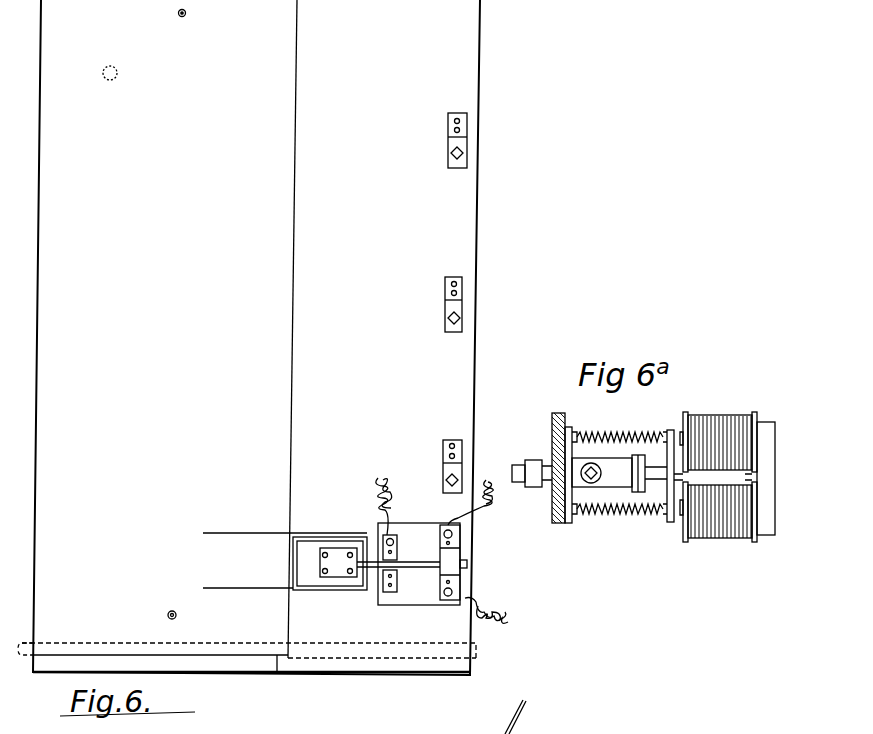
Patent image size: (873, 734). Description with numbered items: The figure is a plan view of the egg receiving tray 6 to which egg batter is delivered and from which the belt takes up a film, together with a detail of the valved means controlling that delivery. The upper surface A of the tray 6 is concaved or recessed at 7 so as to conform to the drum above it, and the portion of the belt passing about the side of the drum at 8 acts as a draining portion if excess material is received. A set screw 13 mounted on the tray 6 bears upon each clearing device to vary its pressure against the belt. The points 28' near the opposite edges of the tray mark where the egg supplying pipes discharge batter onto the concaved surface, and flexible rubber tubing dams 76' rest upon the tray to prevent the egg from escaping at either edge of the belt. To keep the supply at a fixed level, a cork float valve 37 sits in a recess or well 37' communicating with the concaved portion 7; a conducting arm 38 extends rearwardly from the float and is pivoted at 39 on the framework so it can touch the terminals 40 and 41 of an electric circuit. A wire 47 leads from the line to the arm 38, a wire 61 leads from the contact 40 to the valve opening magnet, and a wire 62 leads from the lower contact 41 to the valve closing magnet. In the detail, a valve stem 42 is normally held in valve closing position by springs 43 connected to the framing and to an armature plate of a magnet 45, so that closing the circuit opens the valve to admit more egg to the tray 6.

In FIG. 6, the egg receiving tray 6 is at (249, 337).
In FIG. 6, the concaved or recessed portion 7 is at (225, 632).
In FIG. 6, the draining portion of the belt 8 is at (523, 700).
In FIG. 6, the set screw 13 is at (448, 153).
In FIG. 6A, the set screw 13 is at (615, 437).
In FIG. 6, the egg discharge points 28' is at (173, 315).
In FIG. 6, the float valve 37 is at (285, 544).
In FIG. 6, the recess or well 37' is at (340, 598).
In FIG. 6, the arm 38 is at (370, 588).
In FIG. 6, the pivot 39 is at (415, 548).
In FIG. 6, the terminal 40 is at (470, 556).
In FIG. 6, the terminal 41 is at (470, 581).
In FIG. 6A, the valve stem 42 is at (655, 490).
In FIG. 6A, the springs 43 is at (670, 476).
In FIG. 6A, the magnet 45 is at (722, 420).
In FIG. 6, the wire 47 is at (378, 478).
In FIG. 6, the wire 61 is at (486, 480).
In FIG. 6, the wire 62 is at (508, 614).
In FIG. 6, the dams 76' is at (91, 321).
In FIG. 6, the upper surface of the tray A is at (310, 625).